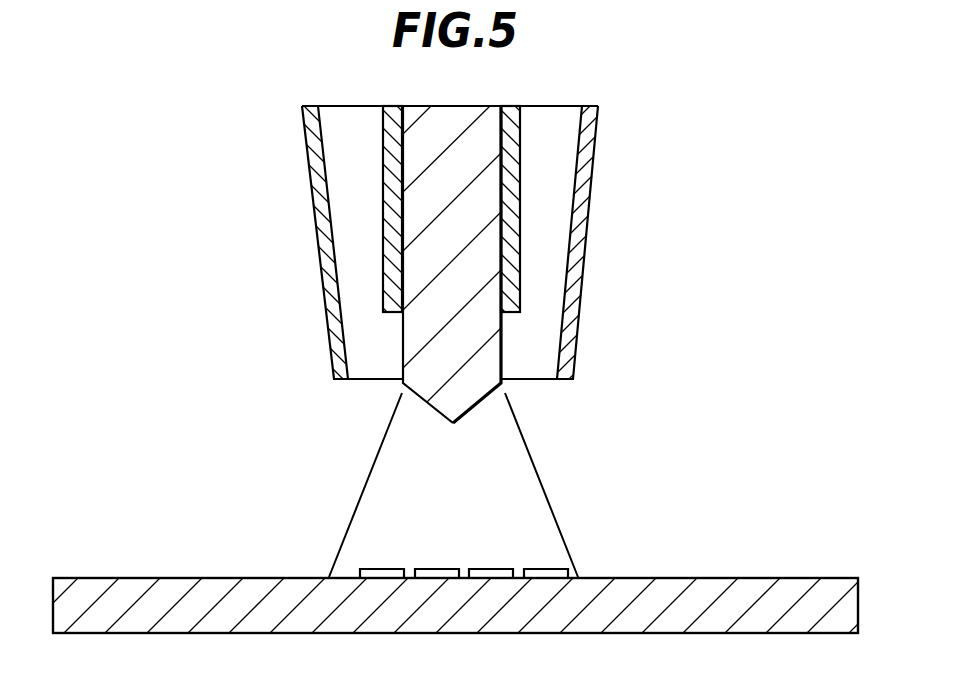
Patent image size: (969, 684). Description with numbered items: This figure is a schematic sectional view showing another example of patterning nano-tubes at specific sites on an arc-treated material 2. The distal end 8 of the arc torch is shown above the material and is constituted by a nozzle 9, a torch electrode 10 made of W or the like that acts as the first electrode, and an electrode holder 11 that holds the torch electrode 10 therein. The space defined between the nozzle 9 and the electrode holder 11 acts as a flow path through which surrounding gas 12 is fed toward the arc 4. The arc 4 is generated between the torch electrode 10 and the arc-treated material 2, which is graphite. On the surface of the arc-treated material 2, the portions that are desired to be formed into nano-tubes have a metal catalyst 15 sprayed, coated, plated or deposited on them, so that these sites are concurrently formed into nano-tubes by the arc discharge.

The arc-treated material 2 is at (115, 580).
The arc 4 is at (398, 510).
The distal end 8 is at (317, 222).
The nozzle 9 is at (590, 147).
The torch electrode 10 is at (480, 362).
The electrode holder 11 is at (512, 238).
The surrounding gas 12 is at (363, 342).
The metal catalyst 15 is at (390, 579).